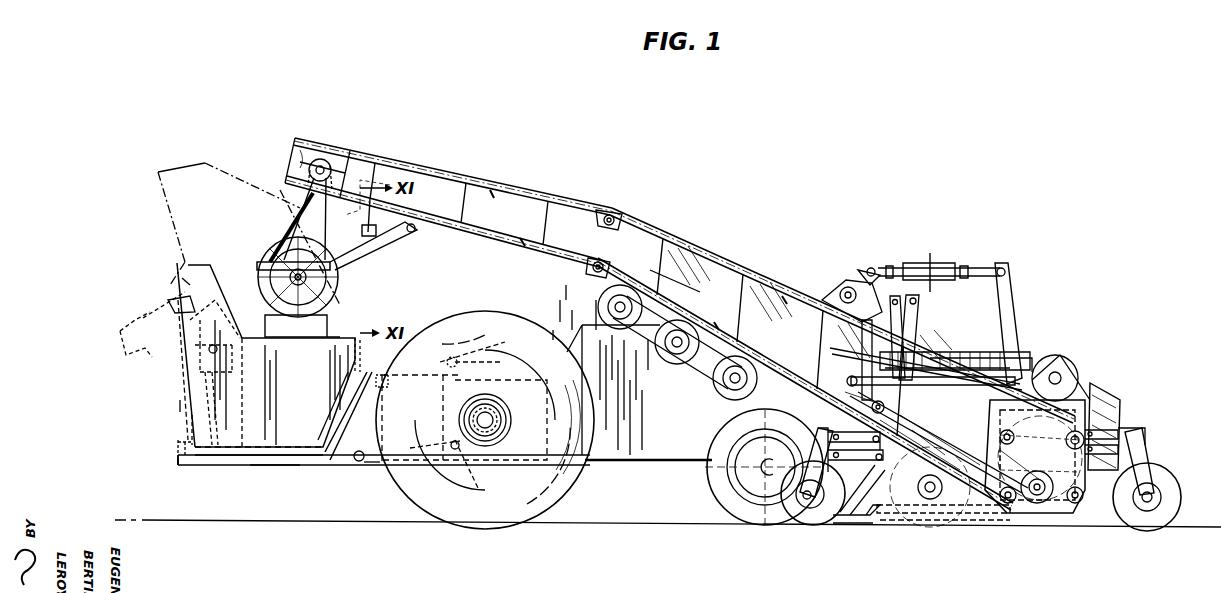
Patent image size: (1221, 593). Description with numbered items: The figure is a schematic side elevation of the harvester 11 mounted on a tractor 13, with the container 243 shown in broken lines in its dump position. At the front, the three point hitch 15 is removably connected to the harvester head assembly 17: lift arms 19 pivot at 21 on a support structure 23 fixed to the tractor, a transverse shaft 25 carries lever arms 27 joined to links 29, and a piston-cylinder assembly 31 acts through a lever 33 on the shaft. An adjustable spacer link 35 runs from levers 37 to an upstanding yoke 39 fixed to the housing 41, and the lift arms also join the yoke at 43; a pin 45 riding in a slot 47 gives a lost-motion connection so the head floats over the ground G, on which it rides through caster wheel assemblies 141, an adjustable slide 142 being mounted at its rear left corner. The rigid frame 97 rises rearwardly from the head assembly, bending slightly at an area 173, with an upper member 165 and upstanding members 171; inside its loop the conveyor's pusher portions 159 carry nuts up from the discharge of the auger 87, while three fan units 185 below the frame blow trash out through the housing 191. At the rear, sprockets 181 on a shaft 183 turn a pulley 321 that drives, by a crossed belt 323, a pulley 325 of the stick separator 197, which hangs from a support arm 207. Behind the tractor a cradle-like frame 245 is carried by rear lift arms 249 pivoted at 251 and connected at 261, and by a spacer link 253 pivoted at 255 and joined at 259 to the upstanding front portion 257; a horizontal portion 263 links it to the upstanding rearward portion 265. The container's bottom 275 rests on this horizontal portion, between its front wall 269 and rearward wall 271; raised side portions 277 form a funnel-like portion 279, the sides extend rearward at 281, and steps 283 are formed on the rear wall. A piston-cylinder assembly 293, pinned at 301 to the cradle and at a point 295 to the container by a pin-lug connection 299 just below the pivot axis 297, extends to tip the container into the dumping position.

The harvester 11 is at (934, 204).
The tractor 13 is at (632, 462).
The front three point hitch 15 is at (1025, 244).
The harvester head assembly 17 is at (1116, 328).
The lift arms 19 is at (990, 368).
The pivotal attachment 21 is at (848, 378).
The support structure 23 is at (822, 290).
The transverse shaft 25 is at (846, 282).
The lever arms 27 is at (896, 292).
The links 29 is at (917, 322).
The piston-cylinder assembly 31 is at (868, 344).
The lever 33 is at (871, 266).
The adjustable spacer link 35 is at (940, 265).
The levers 37 is at (862, 265).
The upstanding yoke 39 is at (1012, 318).
The housing 41 is at (1118, 402).
The pivotal connection 43 is at (1022, 360).
The pin 45 is at (915, 393).
The slot 47 is at (925, 363).
The auger 87 is at (1055, 508).
The frame 97 is at (611, 210).
The wheel assemblies 141 is at (826, 526).
The adjustable slide 142 is at (852, 528).
The portions 159 is at (492, 194).
The longitudinal upper member 165 is at (700, 250).
The upstanding members 171 is at (478, 178).
The area 173 is at (592, 277).
The sprockets 181 is at (335, 142).
The shaft 183 is at (298, 169).
The fan units 185 is at (686, 386).
The housing 191 is at (656, 268).
The stick separator 197 is at (266, 247).
The support arm 207 is at (380, 254).
The container 243 is at (196, 418).
The cradle-like frame 245 is at (178, 457).
The lift arms 249 is at (440, 478).
The pivotal attachment 251 is at (466, 466).
The adjustable spacer link 253 is at (455, 358).
The pivotal connection 255 is at (502, 360).
The upstanding front portion 257 is at (342, 398).
The pivotal connection 259 is at (345, 362).
The pivotal connection 261 is at (368, 470).
The horizontal portion 263 is at (275, 465).
The upstanding rearward portion 265 is at (182, 380).
The front wall 269 is at (335, 400).
The rearward wall 271 is at (210, 388).
The bottom 275 is at (244, 452).
The upwardly extending portion 277 is at (185, 292).
The funnel-like portion 279 is at (190, 259).
The rearwardly extending portion 281 is at (172, 298).
The steps 283 is at (178, 280).
The piston-cylinder assembly 293 is at (180, 405).
The point of pivotal attachment 295 is at (216, 365).
The pivot axis 297 is at (170, 333).
The pin-lug connection 299 is at (212, 348).
The pivotal connection 301 is at (178, 448).
The pulley 321 is at (332, 168).
The crossed belt 323 is at (298, 218).
The pulley 325 is at (318, 286).
The ground G is at (318, 518).